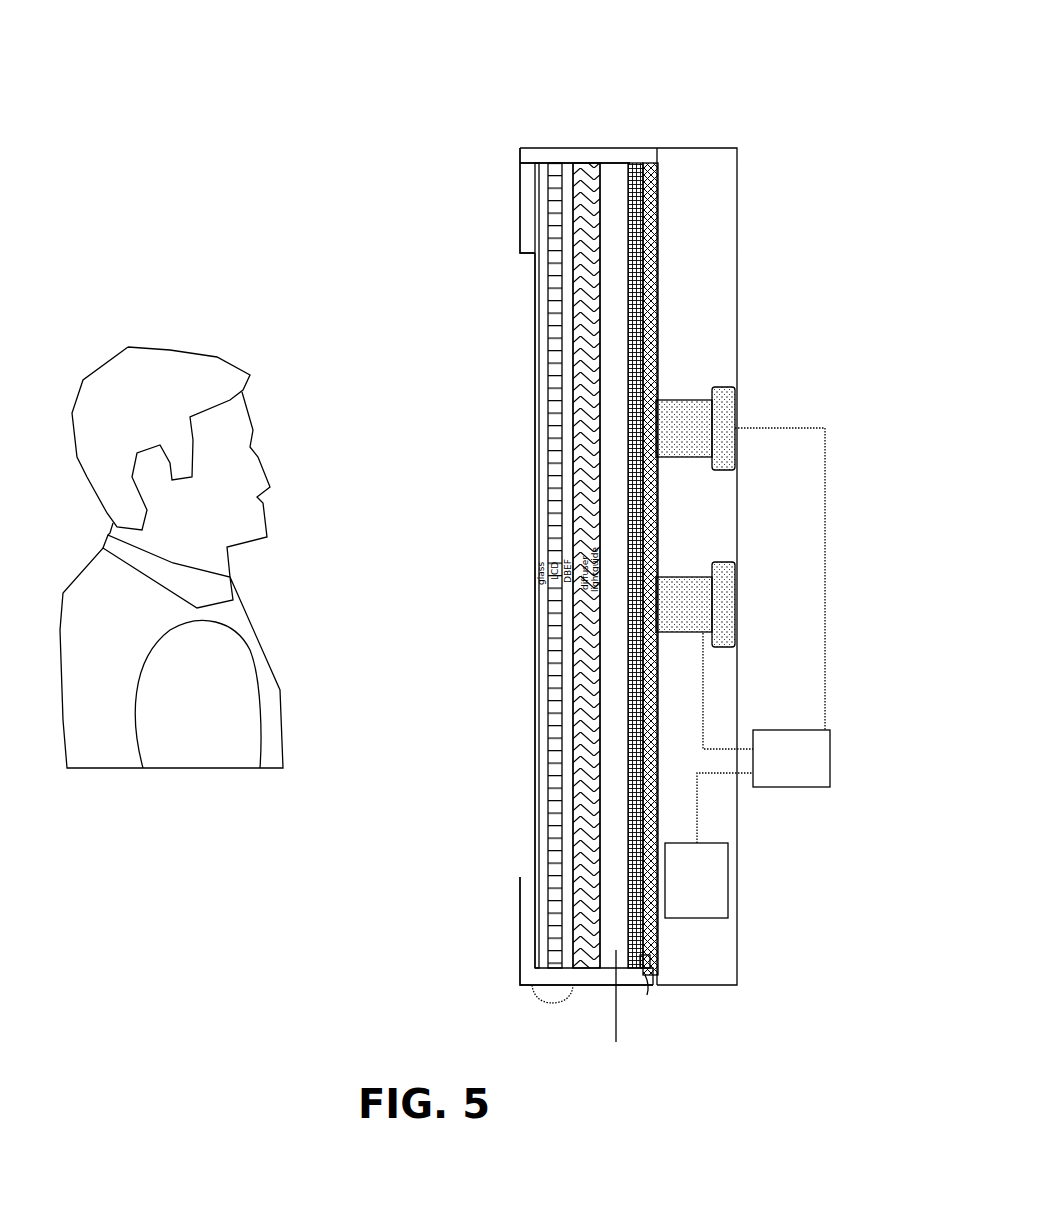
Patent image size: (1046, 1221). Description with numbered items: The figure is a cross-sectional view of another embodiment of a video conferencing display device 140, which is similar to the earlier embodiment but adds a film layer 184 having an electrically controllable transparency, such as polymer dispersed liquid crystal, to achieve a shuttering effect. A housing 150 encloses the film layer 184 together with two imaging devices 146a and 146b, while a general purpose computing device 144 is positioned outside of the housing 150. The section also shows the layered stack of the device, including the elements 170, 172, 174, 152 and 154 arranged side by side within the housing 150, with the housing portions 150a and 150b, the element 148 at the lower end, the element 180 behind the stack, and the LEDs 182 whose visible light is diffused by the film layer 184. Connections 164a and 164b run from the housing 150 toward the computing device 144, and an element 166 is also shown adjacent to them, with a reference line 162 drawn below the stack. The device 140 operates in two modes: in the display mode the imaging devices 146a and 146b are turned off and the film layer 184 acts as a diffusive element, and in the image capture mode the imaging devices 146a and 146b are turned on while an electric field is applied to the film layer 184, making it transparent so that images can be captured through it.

The video conferencing display device 140 is at (190, 76).
The general purpose computing device 144 is at (806, 768).
The imaging device 146a is at (712, 436).
The imaging device 146b is at (713, 563).
The bottom bezel 148 is at (552, 1003).
The housing 150 is at (740, 930).
The front housing portion 150a is at (518, 773).
The rear housing portion 150b is at (519, 905).
The optical film layer 152 is at (597, 163).
The optical film layer 154 is at (581, 163).
The viewing axis 162 is at (630, 1010).
The first conductor 164a is at (825, 477).
The second conductor 164b is at (702, 718).
The power supply 166 is at (714, 895).
The cover glass 170 is at (555, 165).
The LCD panel 172 is at (540, 165).
The DBEF film 174 is at (563, 163).
The light guide 180 is at (658, 322).
The LEDs 182 is at (651, 993).
The film layer 184 is at (641, 163).